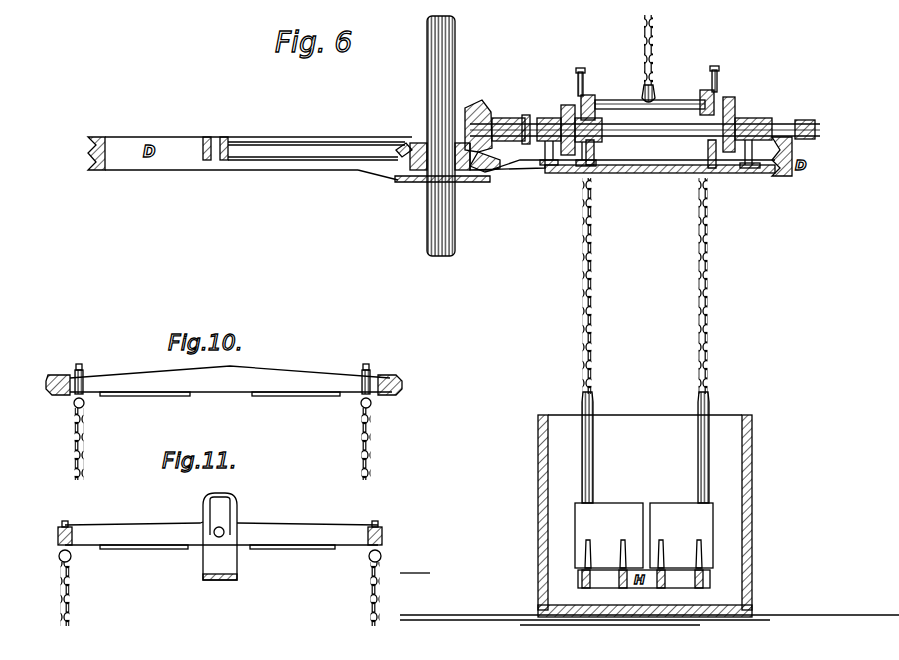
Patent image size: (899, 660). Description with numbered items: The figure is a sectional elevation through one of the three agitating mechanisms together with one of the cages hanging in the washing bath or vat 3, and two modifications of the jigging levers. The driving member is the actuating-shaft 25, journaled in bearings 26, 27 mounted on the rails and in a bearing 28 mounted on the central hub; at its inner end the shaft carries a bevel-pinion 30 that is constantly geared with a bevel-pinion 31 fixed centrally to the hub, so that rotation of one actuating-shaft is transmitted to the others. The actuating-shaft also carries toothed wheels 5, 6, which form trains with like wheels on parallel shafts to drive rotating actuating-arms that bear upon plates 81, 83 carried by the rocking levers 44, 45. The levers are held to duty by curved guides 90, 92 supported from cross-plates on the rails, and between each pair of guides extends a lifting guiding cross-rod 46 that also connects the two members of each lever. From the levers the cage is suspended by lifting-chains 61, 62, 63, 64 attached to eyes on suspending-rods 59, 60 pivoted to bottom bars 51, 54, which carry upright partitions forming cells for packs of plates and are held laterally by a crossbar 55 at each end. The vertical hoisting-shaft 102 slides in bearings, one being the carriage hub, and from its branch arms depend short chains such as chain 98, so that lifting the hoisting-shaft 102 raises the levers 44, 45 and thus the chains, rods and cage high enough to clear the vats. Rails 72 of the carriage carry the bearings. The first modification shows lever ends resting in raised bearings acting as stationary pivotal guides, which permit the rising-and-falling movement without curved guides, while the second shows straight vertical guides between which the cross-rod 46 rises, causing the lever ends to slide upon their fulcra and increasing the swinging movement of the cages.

In FIG. 6, the washing bath or vat 3 is at (538, 466).
In FIG. 6, the toothed wheel 5 is at (730, 100).
In FIG. 6, the toothed wheel 6 is at (567, 105).
In FIG. 6, the actuating-shaft 25 is at (672, 137).
In FIG. 6, the bearing 26 is at (602, 125).
In FIG. 6, the bearing 27 is at (548, 118).
In FIG. 6, the bearing 28 is at (507, 118).
In FIG. 6, the bevel-pinion 30 is at (482, 108).
In FIG. 6, the bevel-pinion 31 is at (404, 145).
In FIG. 6, the rocking lever 44 is at (706, 90).
In FIG. 10, the rocking lever 44 is at (154, 372).
In FIG. 6, the rocking lever 45 is at (592, 98).
In FIG. 6, the lifting guiding cross-rod 46 is at (680, 103).
In FIG. 6, the bottom bar 51 is at (710, 575).
In FIG. 6, the bottom bar 54 is at (582, 573).
In FIG. 6, the crossbar 55 is at (687, 588).
In FIG. 6, the suspending-rod 59 is at (698, 474).
In FIG. 6, the suspending-rod 60 is at (592, 486).
In FIG. 10, the lifting-chain 61 is at (83, 437).
In FIG. 11, the lifting-chain 61 is at (69, 583).
In FIG. 10, the lifting-chain 62 is at (362, 434).
In FIG. 11, the lifting-chain 62 is at (370, 584).
In FIG. 6, the lifting-chain 63 is at (708, 298).
In FIG. 6, the lifting-chain 64 is at (583, 290).
In FIG. 6, the rails 72 is at (300, 142).
In FIG. 10, the plate 81 is at (168, 396).
In FIG. 11, the plate 81 is at (166, 549).
In FIG. 10, the plate 83 is at (294, 396).
In FIG. 11, the plate 83 is at (292, 549).
In FIG. 6, the curved guide 90 is at (720, 75).
In FIG. 6, the curved guide 92 is at (582, 78).
In FIG. 6, the short chain 98 is at (654, 44).
In FIG. 6, the vertical hoisting-shaft 102 is at (427, 236).